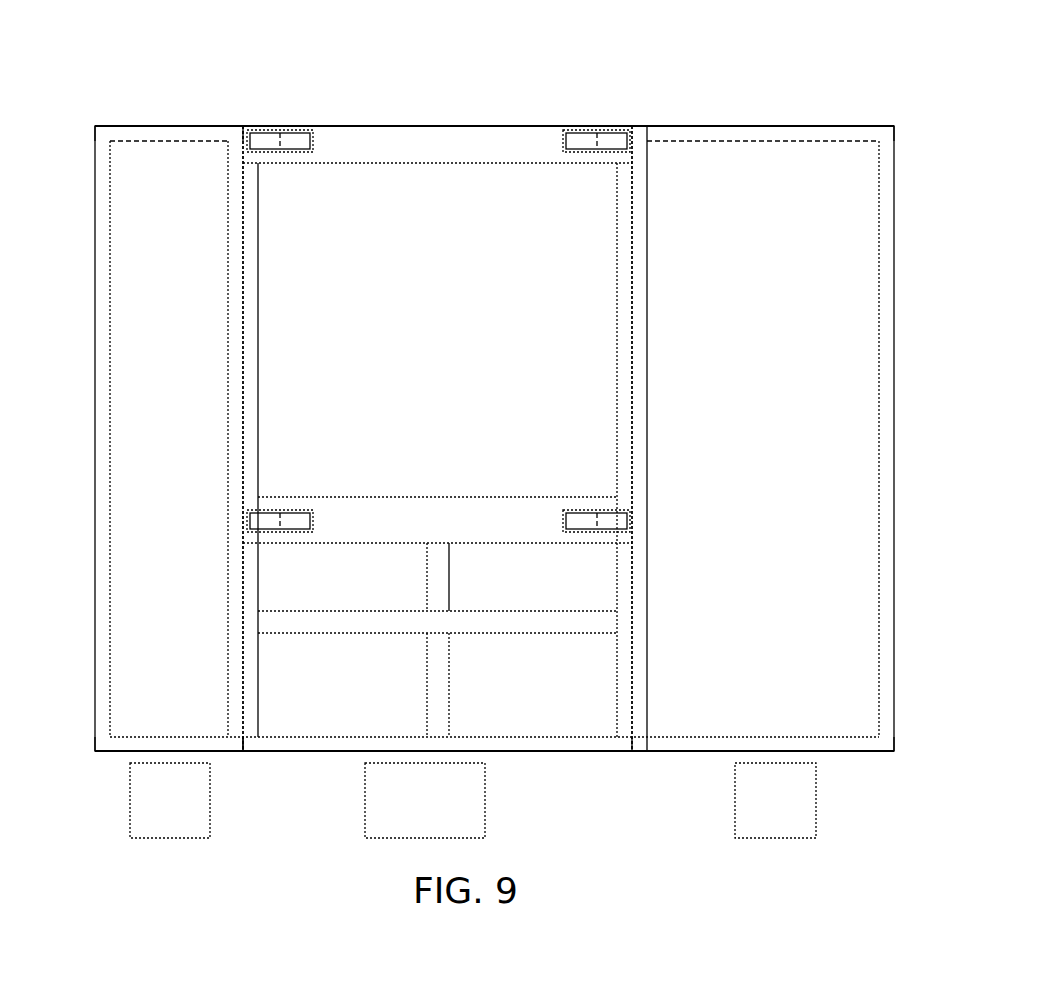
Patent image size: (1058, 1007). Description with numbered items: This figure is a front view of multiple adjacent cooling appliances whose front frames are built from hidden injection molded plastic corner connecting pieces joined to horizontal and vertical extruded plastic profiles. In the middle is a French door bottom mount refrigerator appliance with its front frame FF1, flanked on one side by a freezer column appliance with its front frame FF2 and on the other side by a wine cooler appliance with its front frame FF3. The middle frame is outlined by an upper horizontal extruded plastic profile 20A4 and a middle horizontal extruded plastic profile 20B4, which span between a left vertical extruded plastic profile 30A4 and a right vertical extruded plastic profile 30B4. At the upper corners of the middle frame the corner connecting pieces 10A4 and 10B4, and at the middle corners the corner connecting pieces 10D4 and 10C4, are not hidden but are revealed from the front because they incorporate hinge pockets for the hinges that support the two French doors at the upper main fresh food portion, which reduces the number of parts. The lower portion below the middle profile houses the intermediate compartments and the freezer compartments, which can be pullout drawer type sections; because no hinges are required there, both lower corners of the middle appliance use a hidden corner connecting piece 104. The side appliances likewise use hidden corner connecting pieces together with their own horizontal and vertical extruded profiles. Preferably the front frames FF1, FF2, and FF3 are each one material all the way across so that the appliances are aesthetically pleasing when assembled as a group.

The front frame FF1 is at (391, 110).
The front frame FF2 is at (125, 112).
The front frame FF3 is at (829, 112).
The hidden corner connecting piece 104 is at (632, 744).
The corner connecting piece 10A4 is at (295, 128).
The corner connecting piece 10B4 is at (585, 128).
The corner connecting piece 10C4 is at (583, 522).
The corner connecting piece 10D4 is at (290, 522).
The horizontal extruded plastic profile 20A4 is at (457, 127).
The horizontal extruded plastic profile 20B4 is at (438, 523).
The vertical extruded plastic profile 30A4 is at (258, 347).
The vertical extruded plastic profile 30B4 is at (617, 347).